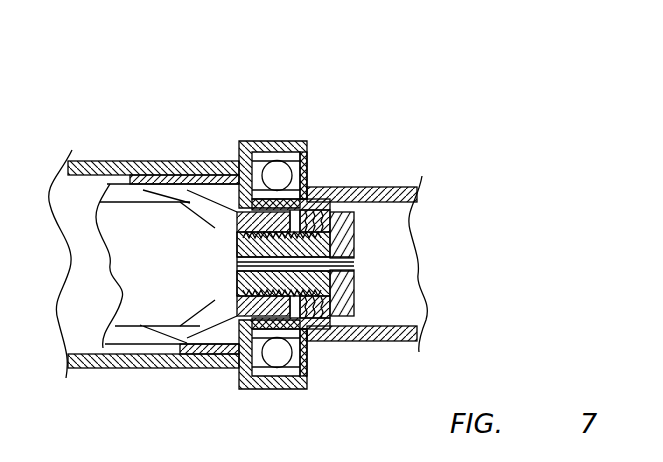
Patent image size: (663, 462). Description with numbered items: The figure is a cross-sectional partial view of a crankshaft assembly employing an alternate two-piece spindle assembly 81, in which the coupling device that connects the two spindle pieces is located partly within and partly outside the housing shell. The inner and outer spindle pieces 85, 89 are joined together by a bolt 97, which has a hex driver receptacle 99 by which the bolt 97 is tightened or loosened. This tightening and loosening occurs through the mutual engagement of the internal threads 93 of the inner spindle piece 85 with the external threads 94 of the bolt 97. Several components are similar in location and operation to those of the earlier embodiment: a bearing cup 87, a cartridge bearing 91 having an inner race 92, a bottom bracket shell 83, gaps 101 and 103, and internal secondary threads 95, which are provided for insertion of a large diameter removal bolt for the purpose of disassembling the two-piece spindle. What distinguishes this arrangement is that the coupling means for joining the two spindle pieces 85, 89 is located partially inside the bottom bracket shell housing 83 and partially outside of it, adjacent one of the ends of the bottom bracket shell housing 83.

The two-piece spindle assembly 81 is at (222, 108).
The bottom bracket shell 83 is at (170, 372).
The inner spindle piece 85 is at (133, 184).
The bearing cup 87 is at (302, 140).
The outer spindle piece 89 is at (393, 186).
The cartridge bearing 91 is at (310, 158).
The inner race 92 is at (322, 191).
The internal threads 93 is at (230, 254).
The external threads 94 is at (250, 325).
The internal secondary threads 95 is at (354, 292).
The bolt 97 is at (354, 232).
The hex driver receptacle 99 is at (354, 262).
The gap 101 is at (245, 216).
The gap 103 is at (300, 325).